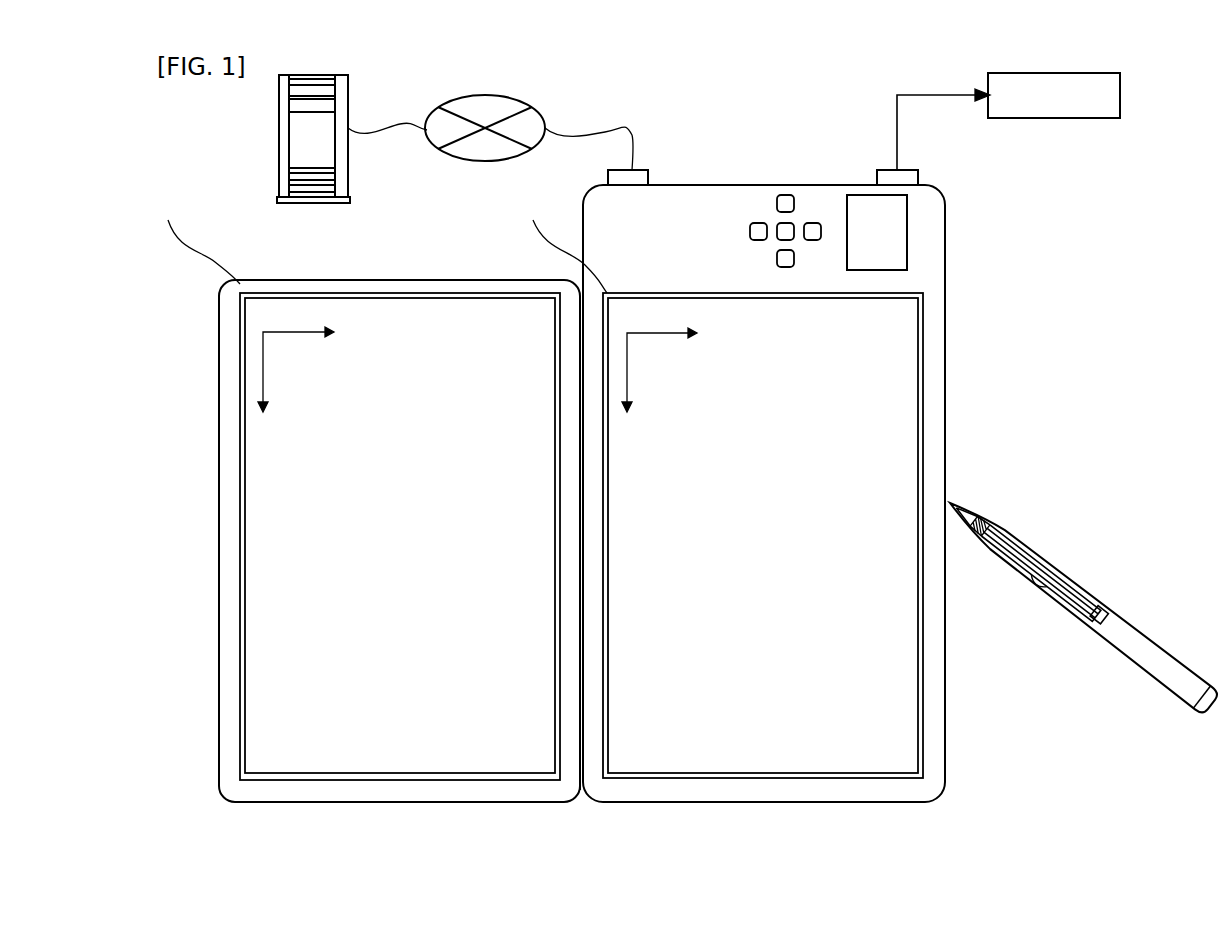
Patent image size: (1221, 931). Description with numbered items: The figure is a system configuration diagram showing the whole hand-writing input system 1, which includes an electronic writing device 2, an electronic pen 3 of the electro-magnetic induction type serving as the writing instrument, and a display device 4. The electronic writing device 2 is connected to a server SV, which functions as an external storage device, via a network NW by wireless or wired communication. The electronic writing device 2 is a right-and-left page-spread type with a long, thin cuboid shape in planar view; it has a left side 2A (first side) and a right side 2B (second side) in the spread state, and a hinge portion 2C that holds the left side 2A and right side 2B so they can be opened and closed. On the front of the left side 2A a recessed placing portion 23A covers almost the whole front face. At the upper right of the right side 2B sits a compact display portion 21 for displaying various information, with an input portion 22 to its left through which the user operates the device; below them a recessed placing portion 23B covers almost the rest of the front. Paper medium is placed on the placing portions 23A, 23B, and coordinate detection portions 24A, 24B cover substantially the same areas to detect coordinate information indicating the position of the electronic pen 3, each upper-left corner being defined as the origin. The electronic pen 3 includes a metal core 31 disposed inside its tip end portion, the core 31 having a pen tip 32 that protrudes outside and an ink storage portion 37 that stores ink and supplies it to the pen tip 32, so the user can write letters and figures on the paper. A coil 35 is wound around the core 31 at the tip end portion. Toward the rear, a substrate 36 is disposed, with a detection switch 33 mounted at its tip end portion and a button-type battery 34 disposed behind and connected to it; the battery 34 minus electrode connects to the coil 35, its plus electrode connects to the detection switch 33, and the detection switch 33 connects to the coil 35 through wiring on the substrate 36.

The hand-writing input system 1 is at (1098, 311).
The electronic writing device 2 is at (973, 305).
The left side 2A is at (218, 418).
The right side 2B is at (950, 378).
The hinge portion 2C is at (582, 720).
The electronic pen 3 is at (1087, 547).
The display device 4 is at (1120, 100).
The display portion 21 is at (907, 232).
The input portion 22 is at (770, 195).
The placing portion 23A is at (243, 574).
The placing portion 23B is at (605, 574).
The coordinate detection portion 24A is at (262, 735).
The coordinate detection portion 24B is at (903, 735).
The core 31 is at (1017, 553).
The pen tip 32 is at (962, 498).
The detection switch 33 is at (1104, 615).
The battery 34 is at (1183, 705).
The coil 35 is at (977, 530).
The substrate 36 is at (1150, 653).
The ink storage portion 37 is at (1047, 577).
The server SV is at (279, 124).
The network NW is at (455, 160).